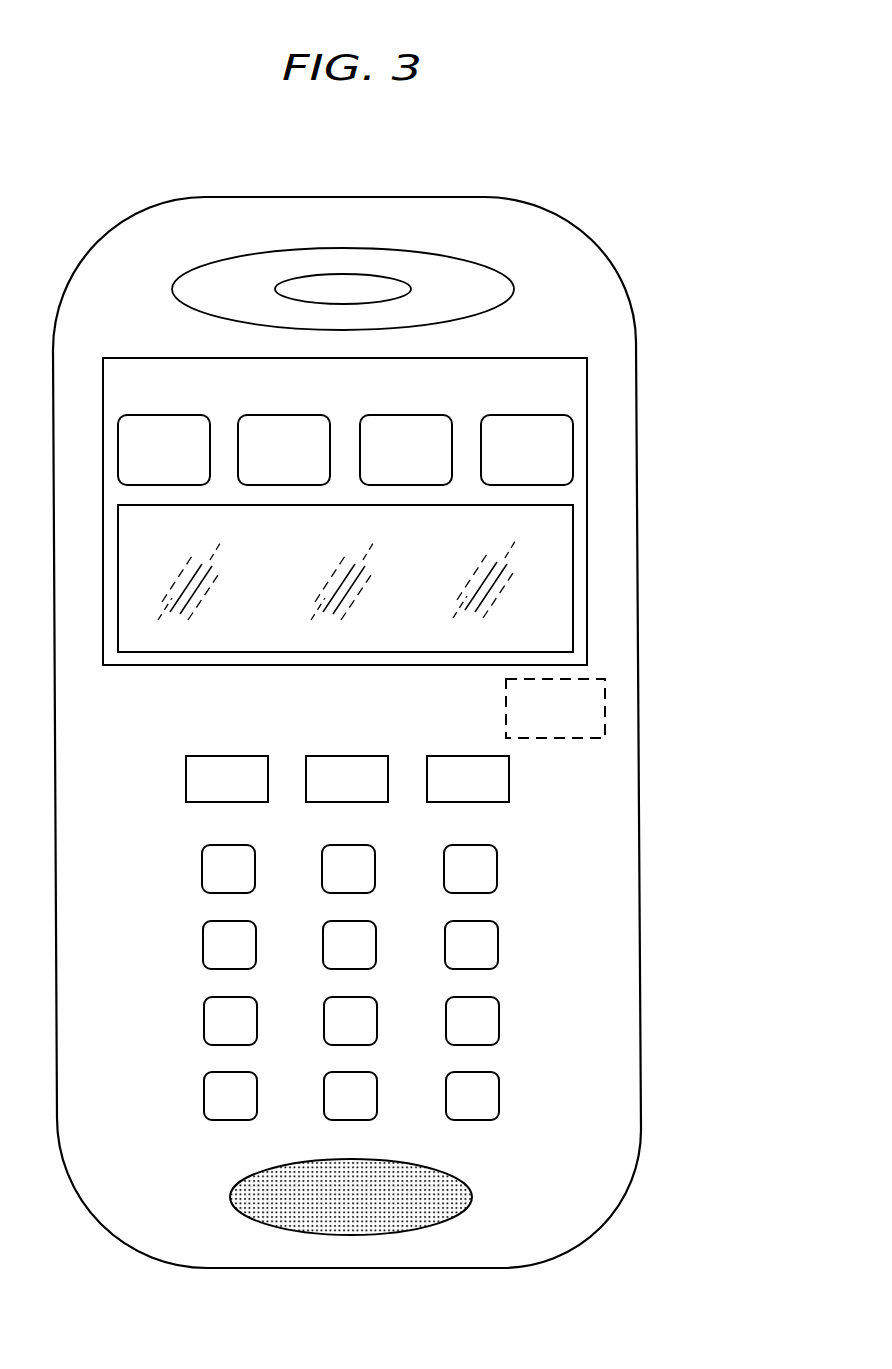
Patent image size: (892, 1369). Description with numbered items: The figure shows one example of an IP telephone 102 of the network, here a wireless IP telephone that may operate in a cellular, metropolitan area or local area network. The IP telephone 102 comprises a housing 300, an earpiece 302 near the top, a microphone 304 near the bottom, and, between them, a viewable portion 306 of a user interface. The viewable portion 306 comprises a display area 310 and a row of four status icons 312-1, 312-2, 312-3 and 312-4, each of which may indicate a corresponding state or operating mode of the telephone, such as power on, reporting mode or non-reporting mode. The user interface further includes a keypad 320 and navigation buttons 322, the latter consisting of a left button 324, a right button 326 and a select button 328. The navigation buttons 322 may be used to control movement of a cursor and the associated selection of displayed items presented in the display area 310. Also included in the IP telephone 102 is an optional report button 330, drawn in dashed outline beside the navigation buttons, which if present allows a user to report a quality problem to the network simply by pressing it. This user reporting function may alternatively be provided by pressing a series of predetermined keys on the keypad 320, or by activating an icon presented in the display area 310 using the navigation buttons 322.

The IP telephone 102 is at (640, 208).
The housing 300 is at (350, 197).
The earpiece 302 is at (514, 289).
The microphone 304 is at (230, 1196).
The viewable portion of user interface 306 is at (158, 358).
The display area 310 is at (557, 524).
The status icon 312-1 is at (163, 414).
The status icon 312-2 is at (284, 414).
The status icon 312-3 is at (406, 414).
The status icon 312-4 is at (526, 414).
The keypad 320 is at (183, 835).
The navigation buttons 322 is at (178, 742).
The left button 324 is at (229, 755).
The right button 326 is at (471, 755).
The select button 328 is at (350, 755).
The report button 330 is at (605, 706).